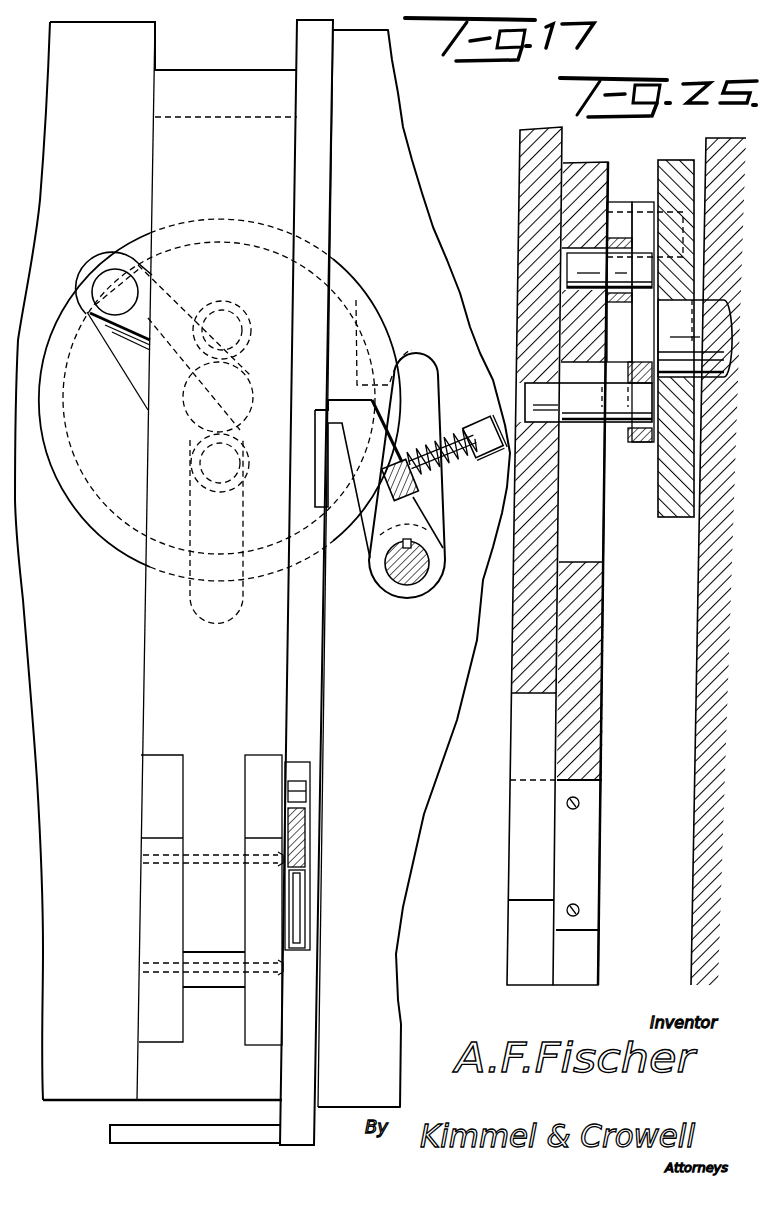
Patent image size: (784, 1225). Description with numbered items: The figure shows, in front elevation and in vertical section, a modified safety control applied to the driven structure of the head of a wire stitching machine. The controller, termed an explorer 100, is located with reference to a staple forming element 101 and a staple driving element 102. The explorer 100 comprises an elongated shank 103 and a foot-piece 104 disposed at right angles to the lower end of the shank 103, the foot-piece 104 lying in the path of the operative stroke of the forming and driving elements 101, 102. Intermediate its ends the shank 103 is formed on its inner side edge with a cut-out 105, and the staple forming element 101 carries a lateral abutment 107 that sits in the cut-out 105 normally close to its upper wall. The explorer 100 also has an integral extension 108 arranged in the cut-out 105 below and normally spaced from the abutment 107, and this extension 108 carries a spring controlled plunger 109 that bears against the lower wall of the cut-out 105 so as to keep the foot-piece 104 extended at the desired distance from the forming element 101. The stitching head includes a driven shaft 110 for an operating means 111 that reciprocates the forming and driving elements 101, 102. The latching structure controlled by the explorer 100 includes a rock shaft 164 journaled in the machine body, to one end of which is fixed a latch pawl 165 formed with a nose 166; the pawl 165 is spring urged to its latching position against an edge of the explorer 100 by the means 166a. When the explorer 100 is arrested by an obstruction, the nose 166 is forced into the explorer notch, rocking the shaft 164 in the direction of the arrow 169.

In FIG. 17, the explorer 100 is at (330, 691).
In FIG. 25, the staple forming element 101 is at (585, 755).
In FIG. 17, the staple driving element 102 is at (211, 900).
In FIG. 25, the staple driving element 102 is at (525, 677).
In FIG. 17, the elongated shank 103 is at (335, 173).
In FIG. 17, the foot-piece 104 is at (245, 1133).
In FIG. 17, the cut-out 105 is at (298, 897).
In FIG. 17, the lateral abutment 107 is at (302, 792).
In FIG. 17, the extension 108 is at (299, 862).
In FIG. 17, the spring controlled plunger 109 is at (307, 920).
In FIG. 17, the driven shaft 110 is at (242, 386).
In FIG. 25, the driven shaft 110 is at (696, 338).
In FIG. 17, the operating means 111 is at (84, 500).
In FIG. 25, the operating means 111 is at (665, 490).
In FIG. 17, the rock shaft 164 is at (415, 580).
In FIG. 17, the latch pawl 165 is at (393, 430).
In FIG. 17, the nose 166 is at (315, 418).
In FIG. 17, the spring means 166a is at (449, 434).
In FIG. 17, the arrow 169 is at (436, 474).